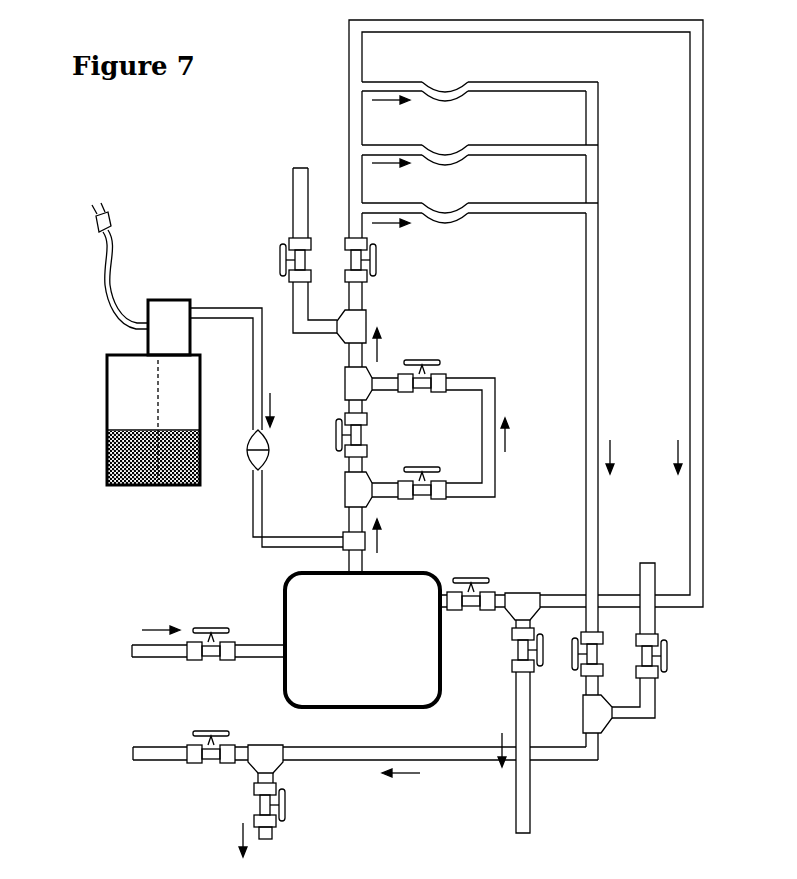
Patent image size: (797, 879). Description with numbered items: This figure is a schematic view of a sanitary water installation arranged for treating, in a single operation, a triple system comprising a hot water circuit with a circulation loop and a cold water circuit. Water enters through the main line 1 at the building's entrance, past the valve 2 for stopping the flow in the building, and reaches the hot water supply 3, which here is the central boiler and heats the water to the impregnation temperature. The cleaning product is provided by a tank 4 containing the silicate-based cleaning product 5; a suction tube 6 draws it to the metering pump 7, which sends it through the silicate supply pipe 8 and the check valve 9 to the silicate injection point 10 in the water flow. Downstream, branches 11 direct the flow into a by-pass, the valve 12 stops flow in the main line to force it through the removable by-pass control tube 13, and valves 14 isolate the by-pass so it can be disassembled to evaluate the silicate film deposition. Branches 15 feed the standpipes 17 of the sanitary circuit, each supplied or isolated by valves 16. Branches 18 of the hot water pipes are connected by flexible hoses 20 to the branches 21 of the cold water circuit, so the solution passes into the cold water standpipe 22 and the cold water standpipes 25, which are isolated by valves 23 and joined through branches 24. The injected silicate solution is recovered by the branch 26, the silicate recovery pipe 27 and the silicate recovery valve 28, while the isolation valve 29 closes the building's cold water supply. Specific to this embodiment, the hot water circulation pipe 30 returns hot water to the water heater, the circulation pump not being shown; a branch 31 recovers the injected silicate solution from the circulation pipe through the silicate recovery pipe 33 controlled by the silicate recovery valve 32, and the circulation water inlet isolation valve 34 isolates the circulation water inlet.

The main line 1 is at (160, 657).
The valve 2 is at (212, 657).
The hot water supply 3 is at (287, 635).
The tank 4 is at (107, 420).
The silicate-based cleaning product 5 is at (148, 470).
The suction tube 6 is at (158, 417).
The metering pump 7 is at (170, 300).
The silicate supply pipe 8 is at (217, 308).
The check valve 9 is at (268, 459).
The silicate injection point 10 is at (352, 533).
The branches 11 is at (360, 387).
The valve 12 is at (366, 435).
The by-pass control tube 13 is at (490, 453).
The valves 14 is at (430, 372).
The branches 15 is at (352, 336).
The valves 16 is at (278, 247).
The standpipes 17 is at (357, 143).
The branches 18 is at (376, 85).
The flexible hoses 20 is at (441, 86).
The branches 21 is at (500, 85).
The cold water standpipe 22 is at (595, 307).
The valves 23 is at (598, 652).
The branches 24 is at (603, 725).
The cold water standpipes 25 is at (652, 595).
The branch 26 is at (263, 760).
The silicate recovery pipe 27 is at (275, 833).
The silicate recovery valve 28 is at (285, 800).
The isolation valve 29 is at (212, 753).
The hot water circulation pipe 30 is at (700, 273).
The branch 31 is at (522, 600).
The silicate recovery valve 32 is at (530, 673).
The silicate recovery pipe 33 is at (525, 775).
The circulation water inlet isolation valve 34 is at (473, 612).